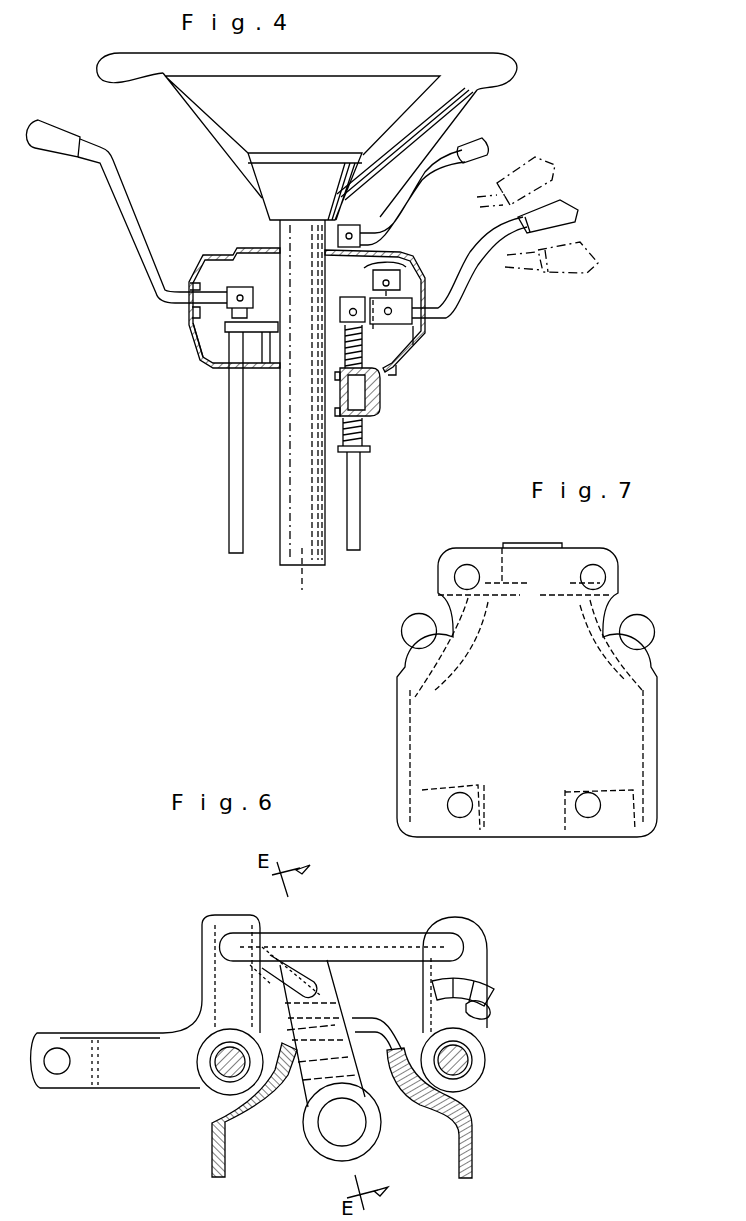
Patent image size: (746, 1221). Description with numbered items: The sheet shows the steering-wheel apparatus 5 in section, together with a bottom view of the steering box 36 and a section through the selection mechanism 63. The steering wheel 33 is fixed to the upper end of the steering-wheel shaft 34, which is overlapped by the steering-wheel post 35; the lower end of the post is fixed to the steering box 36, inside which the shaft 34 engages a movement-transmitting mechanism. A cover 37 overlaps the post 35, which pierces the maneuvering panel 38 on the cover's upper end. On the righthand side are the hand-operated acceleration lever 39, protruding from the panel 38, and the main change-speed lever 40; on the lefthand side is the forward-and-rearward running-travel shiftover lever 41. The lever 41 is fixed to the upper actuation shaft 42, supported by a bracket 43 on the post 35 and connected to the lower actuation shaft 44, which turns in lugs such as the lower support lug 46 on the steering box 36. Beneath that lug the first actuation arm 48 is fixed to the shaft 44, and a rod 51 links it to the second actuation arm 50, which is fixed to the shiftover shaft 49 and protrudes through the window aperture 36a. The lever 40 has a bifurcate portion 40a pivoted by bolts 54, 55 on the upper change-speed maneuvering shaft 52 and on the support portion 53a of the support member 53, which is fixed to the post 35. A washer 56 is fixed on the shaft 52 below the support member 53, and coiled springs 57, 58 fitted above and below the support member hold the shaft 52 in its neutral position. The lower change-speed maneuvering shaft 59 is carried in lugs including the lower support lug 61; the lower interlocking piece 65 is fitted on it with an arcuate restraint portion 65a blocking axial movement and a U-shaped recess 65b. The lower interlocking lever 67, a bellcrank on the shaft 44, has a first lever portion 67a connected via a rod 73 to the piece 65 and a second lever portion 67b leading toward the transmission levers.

In FIG. 4, the steering-wheel apparatus 5 is at (494, 102).
In FIG. 4, the steering wheel 33 is at (432, 56).
In FIG. 4, the steering-wheel shaft 34 is at (300, 588).
In FIG. 4, the steering-wheel post 35 is at (278, 555).
In FIG. 7, the steering box 36 is at (628, 790).
In FIG. 6, the steering box 36 is at (212, 1150).
In FIG. 6, the window aperture 36a is at (392, 1055).
In FIG. 4, the cover 37 is at (196, 345).
In FIG. 4, the maneuvering panel 38 is at (225, 243).
In FIG. 4, the hand-operated acceleration lever 39 is at (480, 147).
In FIG. 4, the main change-speed lever 40 is at (576, 212).
In FIG. 4, the bifurcate portion 40a is at (415, 328).
In FIG. 4, the forward-and-rearward running-travel shiftover lever 41 is at (125, 222).
In FIG. 4, the upper actuation shaft 42 is at (235, 470).
In FIG. 4, the bracket 43 is at (262, 380).
In FIG. 6, the lower actuation shaft 44 is at (222, 1052).
In FIG. 7, the lower support lug 46 is at (665, 625).
In FIG. 6, the first actuation arm 48 is at (205, 945).
In FIG. 6, the forward-and-rearward running-travel shiftover shaft 49 is at (333, 1130).
In FIG. 6, the second actuation arm 50 is at (330, 998).
In FIG. 6, the rod 51 is at (295, 972).
In FIG. 4, the upper change-speed maneuvering shaft 52 is at (352, 497).
In FIG. 4, the support member 53 is at (380, 402).
In FIG. 4, the support portion 53a is at (385, 345).
In FIG. 4, the bolt 54 is at (353, 300).
In FIG. 4, the bolt 55 is at (452, 316).
In FIG. 4, the washer 56 is at (370, 452).
In FIG. 4, the coiled spring 57 is at (343, 350).
In FIG. 4, the coiled spring 58 is at (364, 432).
In FIG. 6, the lower change-speed maneuvering shaft 59 is at (458, 1068).
In FIG. 7, the lower support lug 61 is at (425, 592).
In FIG. 6, the selection mechanism 63 is at (484, 930).
In FIG. 6, the lower interlocking piece 65 is at (478, 958).
In FIG. 6, the restraint portion 65a is at (505, 994).
In FIG. 6, the recess 65b is at (488, 1008).
In FIG. 6, the lower interlocking lever 67 is at (98, 1095).
In FIG. 6, the first lever portion 67a is at (228, 916).
In FIG. 6, the second lever portion 67b is at (90, 1040).
In FIG. 6, the rod 73 is at (400, 938).